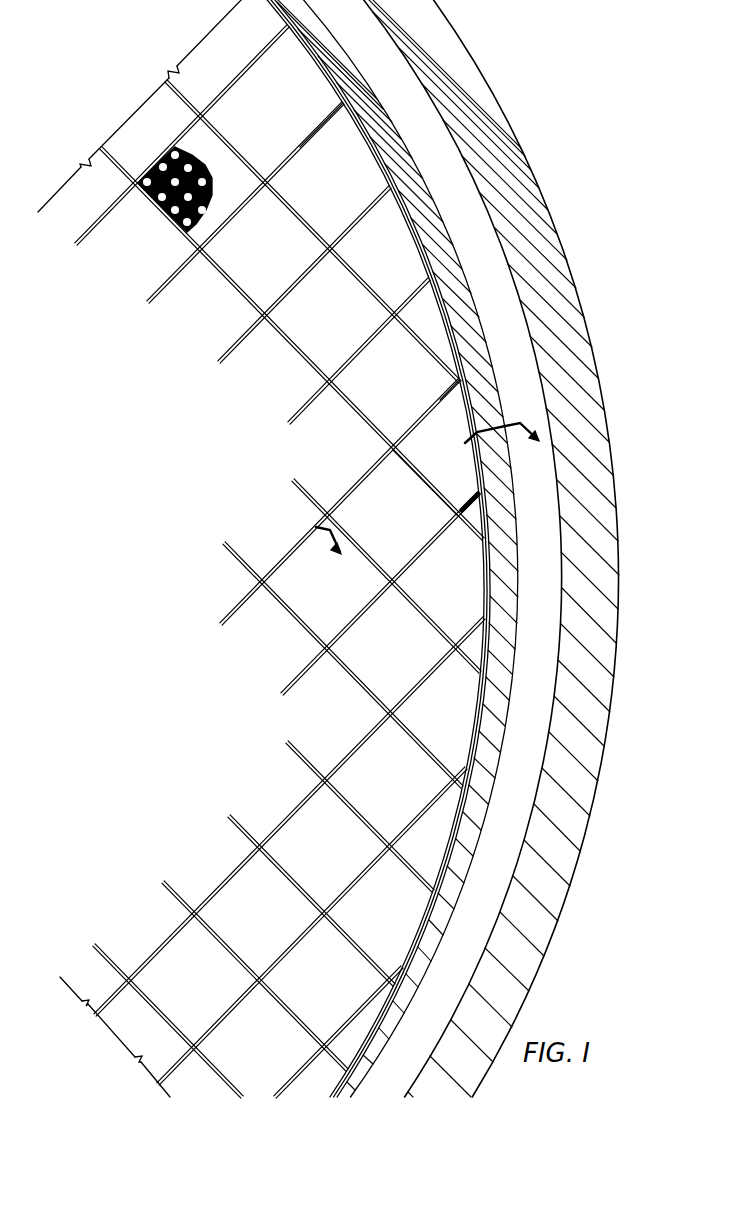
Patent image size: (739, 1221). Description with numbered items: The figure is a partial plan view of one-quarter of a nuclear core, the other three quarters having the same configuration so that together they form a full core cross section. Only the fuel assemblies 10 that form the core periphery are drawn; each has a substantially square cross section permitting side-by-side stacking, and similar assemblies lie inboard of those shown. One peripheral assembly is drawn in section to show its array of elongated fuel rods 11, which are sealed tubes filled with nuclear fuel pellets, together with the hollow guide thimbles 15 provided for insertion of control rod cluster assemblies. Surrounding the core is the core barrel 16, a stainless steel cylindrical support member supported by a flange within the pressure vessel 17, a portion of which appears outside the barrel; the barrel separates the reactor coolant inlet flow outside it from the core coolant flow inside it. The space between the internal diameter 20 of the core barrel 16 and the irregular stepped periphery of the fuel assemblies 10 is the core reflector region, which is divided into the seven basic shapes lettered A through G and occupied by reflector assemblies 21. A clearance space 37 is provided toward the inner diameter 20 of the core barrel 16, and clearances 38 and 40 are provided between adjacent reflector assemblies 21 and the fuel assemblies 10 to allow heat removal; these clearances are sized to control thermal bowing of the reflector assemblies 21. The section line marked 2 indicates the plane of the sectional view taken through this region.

The fuel assemblies 10 is at (280, 561).
The fuel rods 11 is at (174, 224).
The guide thimbles 15 is at (148, 197).
The core barrel 16 is at (390, 133).
The pressure vessel 17 is at (502, 132).
The internal diameter of the core barrel 20 is at (400, 197).
The reflector assemblies 21 is at (328, 97).
The clearance space 37 is at (473, 377).
The clearance 38 is at (432, 473).
The clearance 40 is at (468, 513).
The section line 2- 2 is at (429, 503).